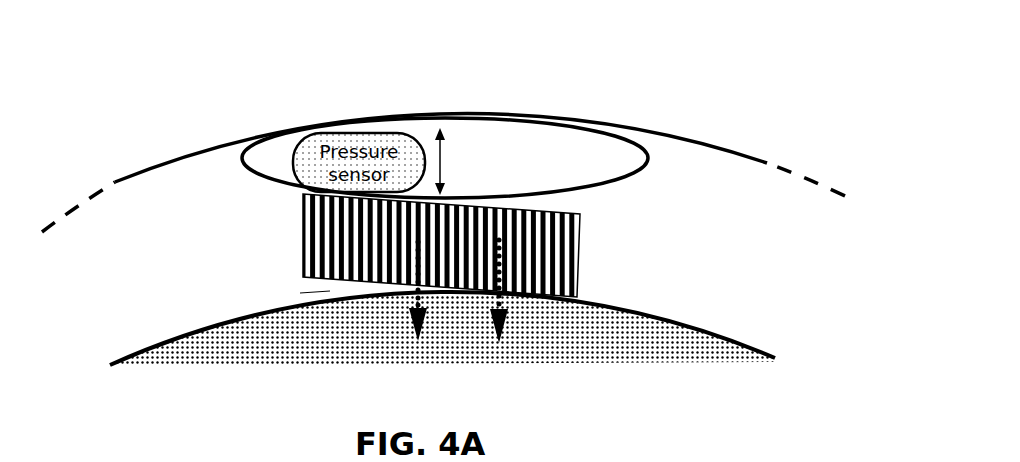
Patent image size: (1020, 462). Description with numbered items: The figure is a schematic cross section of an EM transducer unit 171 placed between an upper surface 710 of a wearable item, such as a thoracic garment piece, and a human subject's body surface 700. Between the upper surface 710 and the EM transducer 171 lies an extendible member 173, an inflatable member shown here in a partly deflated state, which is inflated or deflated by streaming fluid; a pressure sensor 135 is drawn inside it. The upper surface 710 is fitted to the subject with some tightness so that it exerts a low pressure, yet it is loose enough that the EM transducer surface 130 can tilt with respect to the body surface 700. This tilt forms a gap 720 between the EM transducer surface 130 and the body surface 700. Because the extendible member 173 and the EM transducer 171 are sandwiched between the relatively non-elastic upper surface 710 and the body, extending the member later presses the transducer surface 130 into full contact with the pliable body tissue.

The pressure sensor 135 is at (328, 105).
The upper surface of wearable item 710 is at (767, 163).
The extendible member 173 is at (481, 161).
The EM transducer unit 171 is at (338, 233).
The body surface 700 is at (622, 300).
The gap 720 is at (312, 292).
The EM transducer surface 130 is at (442, 330).